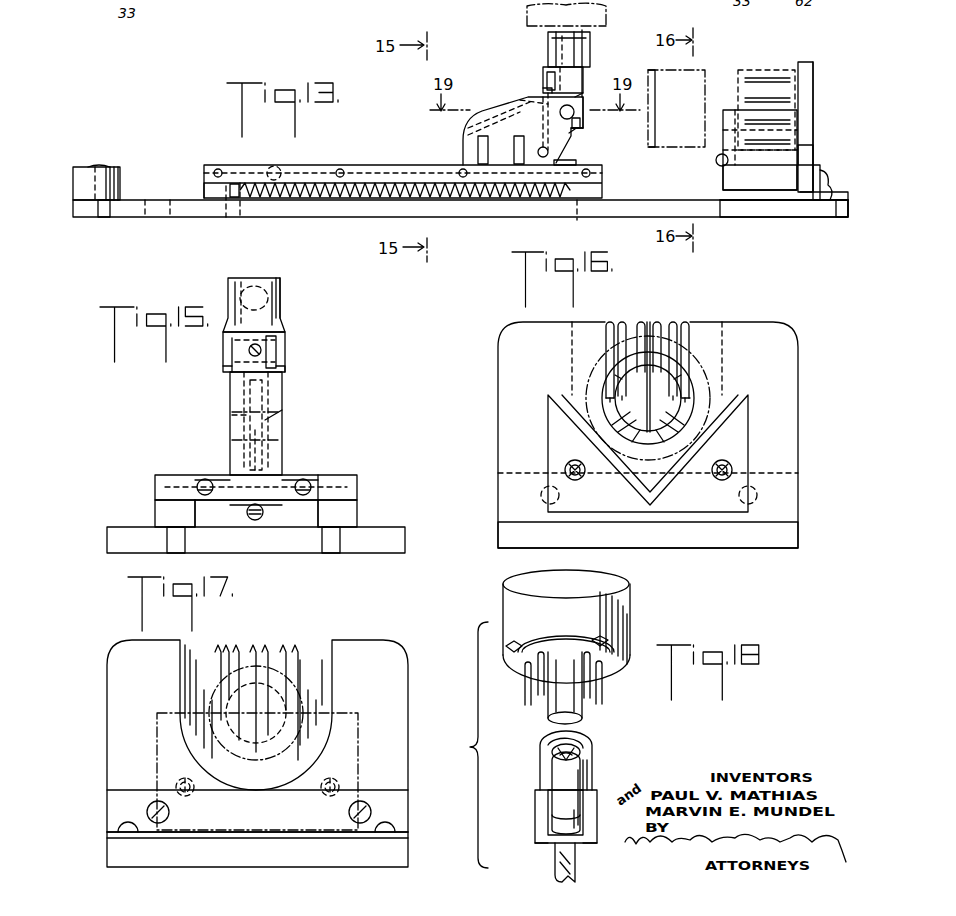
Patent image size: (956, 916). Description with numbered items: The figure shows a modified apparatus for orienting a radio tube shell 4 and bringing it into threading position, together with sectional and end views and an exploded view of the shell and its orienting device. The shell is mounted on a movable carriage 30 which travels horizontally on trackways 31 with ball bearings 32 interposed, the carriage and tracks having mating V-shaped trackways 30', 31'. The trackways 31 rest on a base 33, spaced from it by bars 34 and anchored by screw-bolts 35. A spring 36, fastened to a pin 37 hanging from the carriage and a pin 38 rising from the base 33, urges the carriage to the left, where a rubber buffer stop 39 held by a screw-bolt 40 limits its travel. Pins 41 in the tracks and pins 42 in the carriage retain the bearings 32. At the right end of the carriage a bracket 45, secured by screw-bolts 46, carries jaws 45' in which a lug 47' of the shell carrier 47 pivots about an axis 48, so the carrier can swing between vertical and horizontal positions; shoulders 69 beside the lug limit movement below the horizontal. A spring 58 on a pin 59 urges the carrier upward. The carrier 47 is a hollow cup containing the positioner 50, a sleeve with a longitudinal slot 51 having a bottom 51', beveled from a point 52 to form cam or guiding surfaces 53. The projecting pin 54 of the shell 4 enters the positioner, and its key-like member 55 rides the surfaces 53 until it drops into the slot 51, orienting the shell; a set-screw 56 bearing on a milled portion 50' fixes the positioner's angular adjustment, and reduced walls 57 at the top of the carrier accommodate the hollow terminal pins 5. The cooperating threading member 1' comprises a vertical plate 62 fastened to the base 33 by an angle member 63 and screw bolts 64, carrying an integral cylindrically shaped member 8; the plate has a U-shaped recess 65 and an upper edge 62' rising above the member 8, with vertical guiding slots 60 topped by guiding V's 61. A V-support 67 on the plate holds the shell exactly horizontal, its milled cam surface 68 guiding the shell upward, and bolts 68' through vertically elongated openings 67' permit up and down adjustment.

In FIG. 13, the threading member 1' is at (826, 107).
In FIG. 16, the threading member 1' is at (664, 336).
In FIG. 13, the tube shell 4 is at (684, 70).
In FIG. 18, the tube shell 4 is at (612, 582).
In FIG. 18, the terminal pins 5 is at (560, 652).
In FIG. 13, the cylindrically shaped member 8 is at (760, 76).
In FIG. 16, the cylindrically shaped member 8 is at (690, 388).
In FIG. 17, the cylindrically shaped member 8 is at (320, 682).
In FIG. 15, the carriage 30 is at (256, 481).
In FIG. 15, the V-shaped trackway 30' is at (256, 511).
In FIG. 13, the trackways 31 is at (403, 172).
In FIG. 15, the trackways 31 is at (257, 469).
In FIG. 15, the V-shaped trackway 31' is at (334, 469).
In FIG. 13, the ball bearings 32 is at (270, 167).
In FIG. 15, the ball bearings 32 is at (205, 478).
In FIG. 13, the base 33 is at (130, 215).
In FIG. 15, the base 33 is at (385, 530).
In FIG. 16, the base 33 is at (498, 538).
In FIG. 17, the base 33 is at (396, 850).
In FIG. 13, the bars 34 is at (204, 188).
In FIG. 15, the bars 34 is at (155, 507).
In FIG. 15, the screw-bolts 35 is at (152, 545).
In FIG. 13, the spring 36 is at (357, 192).
In FIG. 15, the spring 36 is at (258, 520).
In FIG. 13, the pin 37 is at (581, 221).
In FIG. 13, the pin 38 is at (232, 208).
In FIG. 13, the buffer stop 39 is at (118, 176).
In FIG. 13, the screw-bolt 40 is at (100, 166).
In FIG. 13, the pins 41 is at (341, 169).
In FIG. 15, the pins 41 is at (200, 480).
In FIG. 13, the pins 42 is at (218, 169).
In FIG. 13, the bracket 45 is at (523, 129).
In FIG. 15, the bracket 45 is at (289, 408).
In FIG. 13, the jaws 45' is at (589, 84).
In FIG. 13, the screw-bolts 46 is at (478, 131).
In FIG. 13, the shell carrier 47 is at (584, 63).
In FIG. 15, the shell carrier 47 is at (267, 305).
In FIG. 18, the shell carrier 47 is at (523, 787).
In FIG. 13, the lug 47' is at (523, 99).
In FIG. 15, the lug 47' is at (274, 423).
In FIG. 18, the lug 47' is at (537, 862).
In FIG. 13, the axis 48 is at (560, 113).
In FIG. 15, the axis 48 is at (232, 395).
In FIG. 15, the positioner 50 is at (228, 293).
In FIG. 18, the positioner 50 is at (559, 777).
In FIG. 18, the milled off portion 50' is at (538, 819).
In FIG. 15, the longitudinal slot 51 is at (209, 348).
In FIG. 18, the longitudinal slot 51 is at (600, 797).
In FIG. 18, the bottom of the slot 51' is at (602, 822).
In FIG. 18, the point 52 is at (548, 746).
In FIG. 18, the cam or guiding surfaces 53 is at (584, 756).
In FIG. 18, the projecting pin 54 is at (556, 724).
In FIG. 18, the key-like member 55 is at (548, 710).
In FIG. 13, the set-screw 56 is at (543, 80).
In FIG. 15, the set-screw 56 is at (250, 351).
In FIG. 13, the reduced walls 57 is at (548, 46).
In FIG. 15, the reduced walls 57 is at (282, 286).
In FIG. 18, the reduced walls 57 is at (588, 770).
In FIG. 13, the spring 58 is at (577, 130).
In FIG. 15, the spring 58 is at (232, 415).
In FIG. 13, the pin 59 is at (543, 158).
In FIG. 15, the pin 59 is at (272, 448).
In FIG. 13, the guiding slots 60 is at (577, 160).
In FIG. 16, the guiding slots 60 is at (616, 326).
In FIG. 17, the guiding slots 60 is at (250, 648).
In FIG. 13, the guiding V's 61 is at (586, 100).
In FIG. 16, the guiding V's 61 is at (648, 322).
In FIG. 17, the guiding V's 61 is at (222, 648).
In FIG. 13, the vertical plate 62 is at (812, 215).
In FIG. 16, the vertical plate 62 is at (662, 435).
In FIG. 17, the vertical plate 62 is at (270, 753).
In FIG. 13, the upper edge 62' is at (794, 107).
In FIG. 13, the angle member 63 is at (830, 212).
In FIG. 17, the angle member 63 is at (300, 818).
In FIG. 13, the screw bolts 64 is at (822, 180).
In FIG. 17, the screw bolts 64 is at (150, 804).
In FIG. 13, the U-shaped recess 65 is at (812, 145).
In FIG. 17, the U-shaped recess 65 is at (312, 720).
In FIG. 13, the V-support 67 is at (784, 214).
In FIG. 16, the V-support 67 is at (663, 453).
In FIG. 17, the V-support 67 is at (285, 763).
In FIG. 16, the openings 67' is at (649, 451).
In FIG. 17, the openings 67' is at (208, 819).
In FIG. 13, the cam surface 68 is at (734, 150).
In FIG. 16, the cam surface 68 is at (648, 488).
In FIG. 13, the bolts 68' is at (698, 161).
In FIG. 16, the bolts 68' is at (646, 477).
In FIG. 17, the bolts 68' is at (285, 785).
In FIG. 13, the shoulders 69 is at (543, 91).
In FIG. 15, the shoulders 69 is at (285, 368).
In FIG. 18, the shoulders 69 is at (540, 846).